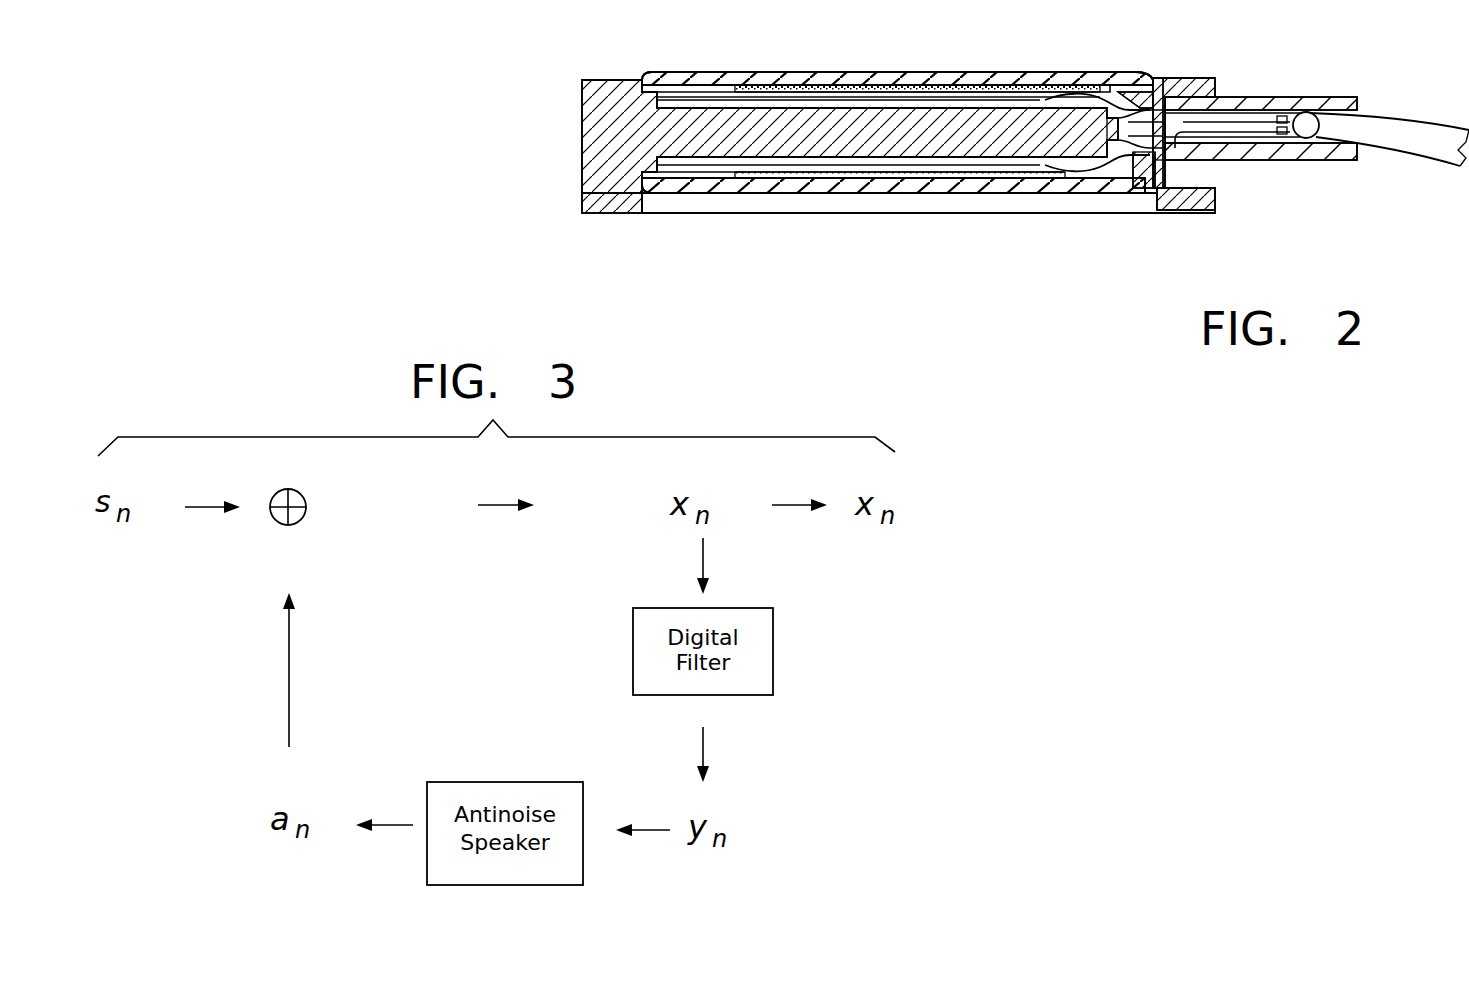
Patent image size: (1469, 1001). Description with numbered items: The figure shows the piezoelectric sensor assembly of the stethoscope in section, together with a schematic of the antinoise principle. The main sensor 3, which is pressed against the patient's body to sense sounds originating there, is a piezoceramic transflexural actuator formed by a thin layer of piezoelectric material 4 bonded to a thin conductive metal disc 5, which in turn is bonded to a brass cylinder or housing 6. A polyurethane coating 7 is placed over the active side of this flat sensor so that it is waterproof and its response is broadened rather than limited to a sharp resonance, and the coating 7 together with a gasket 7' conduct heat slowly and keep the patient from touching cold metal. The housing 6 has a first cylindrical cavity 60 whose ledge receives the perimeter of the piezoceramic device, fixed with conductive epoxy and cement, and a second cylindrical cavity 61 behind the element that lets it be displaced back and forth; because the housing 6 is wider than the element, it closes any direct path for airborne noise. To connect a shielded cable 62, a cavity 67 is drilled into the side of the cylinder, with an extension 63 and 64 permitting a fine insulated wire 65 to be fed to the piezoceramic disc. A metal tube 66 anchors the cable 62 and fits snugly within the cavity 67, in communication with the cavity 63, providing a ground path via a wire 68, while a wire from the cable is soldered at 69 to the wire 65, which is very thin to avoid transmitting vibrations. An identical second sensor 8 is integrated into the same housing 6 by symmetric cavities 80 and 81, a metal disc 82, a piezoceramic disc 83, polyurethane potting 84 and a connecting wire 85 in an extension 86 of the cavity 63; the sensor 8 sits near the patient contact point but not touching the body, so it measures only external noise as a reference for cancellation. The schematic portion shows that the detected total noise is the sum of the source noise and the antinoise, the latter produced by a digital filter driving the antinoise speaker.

The main sensor 3 is at (1008, 225).
The piezoelectric material 4 is at (910, 178).
The conductive metal disc 5 is at (775, 182).
The housing 6 is at (600, 80).
The polyurethane coating 7 is at (928, 246).
The gasket 7' is at (1221, 237).
The second sensor 8 is at (648, 70).
The first cylindrical cavity 60 is at (626, 200).
The second cylindrical cavity 61 is at (690, 170).
The shielded cable 62 is at (1385, 115).
The extension 63 is at (1140, 165).
The extension 64 is at (1125, 140).
The insulated wire 65 is at (1250, 135).
The metal tube 66 is at (1262, 98).
The cavity 67 is at (1166, 160).
The ground wire 68 is at (1228, 140).
The solder joint 69 is at (1280, 130).
The cavity 80 is at (1180, 78).
The cavity 81 is at (690, 100).
The metal disc 82 is at (885, 90).
The piezoceramic disc 83 is at (790, 92).
The polyurethane potting 84 is at (975, 74).
The connecting wire 85 is at (1210, 92).
The extension 86 is at (1132, 105).